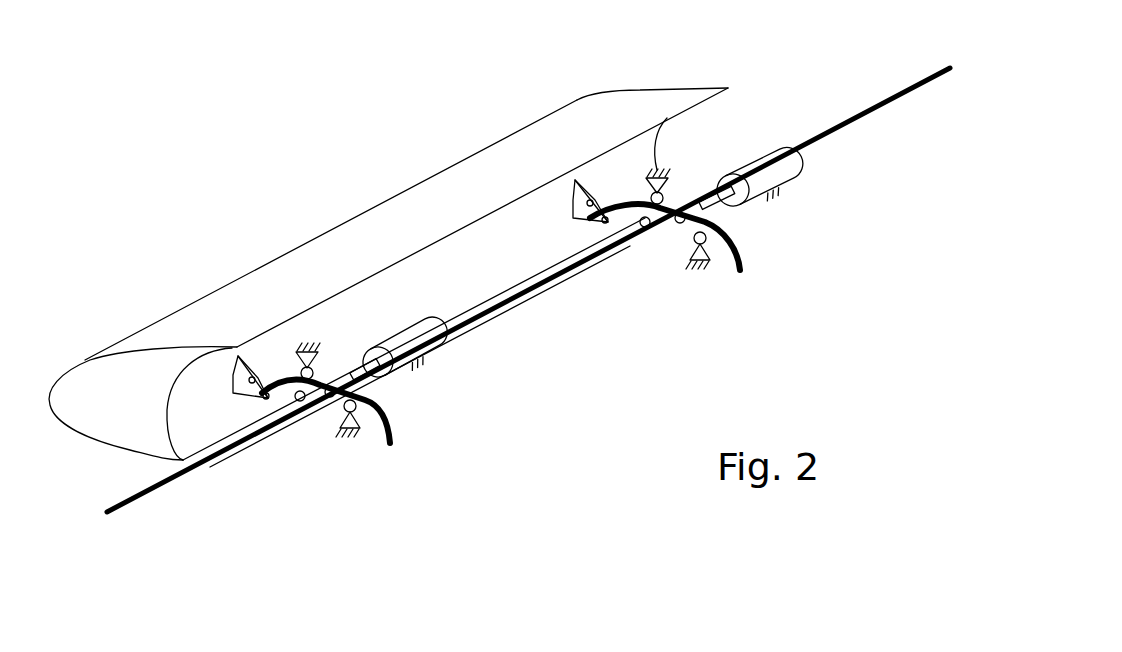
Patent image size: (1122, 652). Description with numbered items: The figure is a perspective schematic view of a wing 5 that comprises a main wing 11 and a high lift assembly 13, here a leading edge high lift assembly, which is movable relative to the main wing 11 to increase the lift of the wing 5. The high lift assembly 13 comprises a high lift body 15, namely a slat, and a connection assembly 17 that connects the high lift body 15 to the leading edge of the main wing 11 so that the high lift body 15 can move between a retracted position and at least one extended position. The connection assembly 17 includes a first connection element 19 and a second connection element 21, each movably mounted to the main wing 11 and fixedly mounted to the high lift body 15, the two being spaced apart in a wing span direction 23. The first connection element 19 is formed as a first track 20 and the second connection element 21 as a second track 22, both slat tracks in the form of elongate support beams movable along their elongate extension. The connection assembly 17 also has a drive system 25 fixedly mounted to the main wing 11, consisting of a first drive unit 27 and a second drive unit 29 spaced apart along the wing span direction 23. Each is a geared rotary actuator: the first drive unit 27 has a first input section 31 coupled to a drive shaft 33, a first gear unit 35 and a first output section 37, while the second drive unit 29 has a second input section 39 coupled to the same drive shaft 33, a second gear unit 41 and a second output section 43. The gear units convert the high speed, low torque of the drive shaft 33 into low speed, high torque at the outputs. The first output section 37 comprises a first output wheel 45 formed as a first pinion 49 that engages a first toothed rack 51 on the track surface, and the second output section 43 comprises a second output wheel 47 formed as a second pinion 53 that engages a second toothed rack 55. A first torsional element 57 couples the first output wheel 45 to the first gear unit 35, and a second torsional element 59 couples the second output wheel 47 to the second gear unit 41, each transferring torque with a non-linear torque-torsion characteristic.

The wing 5 is at (152, 177).
The main wing 11 is at (627, 415).
The high lift assembly 13 is at (828, 76).
The high lift body 15 is at (414, 245).
The connection assembly 17 is at (812, 223).
The first connection element 19 is at (528, 298).
The first track 20 is at (386, 443).
The second connection element 21 is at (722, 294).
The second track 22 is at (733, 263).
The wing span direction 23 is at (240, 207).
The drive system 25 is at (726, 187).
The first drive unit 27 is at (368, 377).
The second drive unit 29 is at (726, 187).
The first input section 31 is at (424, 356).
The drive shaft 33 is at (460, 330).
The first gear unit 35 is at (420, 338).
The first output section 37 is at (380, 350).
The second input section 39 is at (763, 155).
The second gear unit 41 is at (796, 153).
The second output section 43 is at (712, 195).
The first output wheel 45 is at (326, 437).
The second output wheel 47 is at (665, 262).
The first pinion 49 is at (328, 393).
The first toothed rack 51 is at (285, 386).
The second pinion 53 is at (676, 233).
The second toothed rack 55 is at (630, 207).
The first torsional element 57 is at (345, 385).
The second torsional element 59 is at (695, 207).